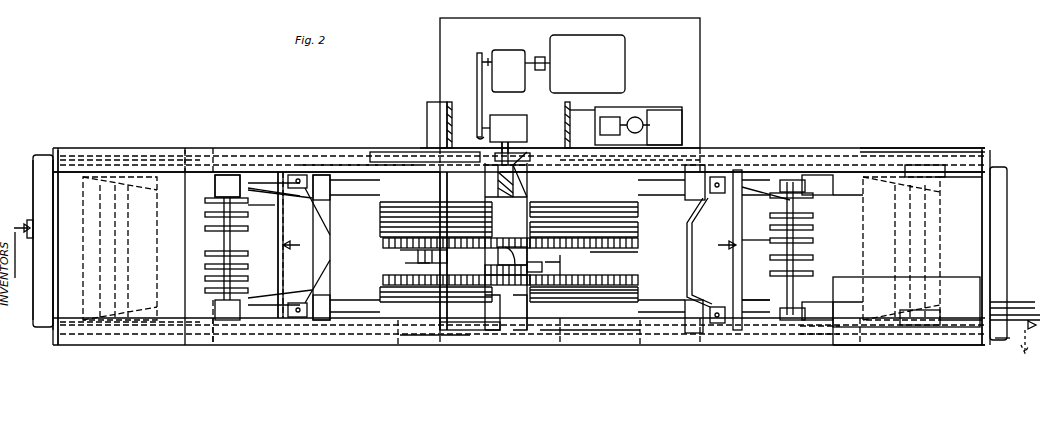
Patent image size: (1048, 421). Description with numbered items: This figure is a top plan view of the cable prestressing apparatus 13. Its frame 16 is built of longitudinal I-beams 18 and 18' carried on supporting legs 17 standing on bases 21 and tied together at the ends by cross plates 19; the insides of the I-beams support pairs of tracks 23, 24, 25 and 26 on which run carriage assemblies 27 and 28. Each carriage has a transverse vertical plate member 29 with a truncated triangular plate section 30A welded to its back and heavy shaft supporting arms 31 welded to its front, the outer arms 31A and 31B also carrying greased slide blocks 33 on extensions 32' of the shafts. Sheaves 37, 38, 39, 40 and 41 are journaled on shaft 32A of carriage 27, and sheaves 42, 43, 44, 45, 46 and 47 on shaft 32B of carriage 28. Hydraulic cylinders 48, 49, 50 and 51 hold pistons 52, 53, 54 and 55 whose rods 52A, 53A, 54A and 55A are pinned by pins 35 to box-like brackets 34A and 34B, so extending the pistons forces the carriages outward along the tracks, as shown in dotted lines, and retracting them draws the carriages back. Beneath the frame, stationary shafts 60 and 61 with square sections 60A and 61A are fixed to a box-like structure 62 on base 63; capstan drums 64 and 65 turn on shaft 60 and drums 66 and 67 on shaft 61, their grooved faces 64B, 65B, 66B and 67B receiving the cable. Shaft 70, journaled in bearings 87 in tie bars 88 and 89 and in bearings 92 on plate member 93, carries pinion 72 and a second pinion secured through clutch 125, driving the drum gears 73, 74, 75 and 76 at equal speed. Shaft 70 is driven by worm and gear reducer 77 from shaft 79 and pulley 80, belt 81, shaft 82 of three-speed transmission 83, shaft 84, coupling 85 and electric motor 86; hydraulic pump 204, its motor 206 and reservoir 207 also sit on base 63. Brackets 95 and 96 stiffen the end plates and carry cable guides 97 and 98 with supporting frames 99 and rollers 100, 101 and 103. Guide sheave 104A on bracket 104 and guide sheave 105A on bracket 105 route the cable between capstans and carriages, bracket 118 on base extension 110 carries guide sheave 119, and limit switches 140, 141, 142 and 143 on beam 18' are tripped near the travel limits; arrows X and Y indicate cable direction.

The prestressing apparatus 13 is at (383, 109).
The bracket 95 is at (42, 158).
The cable guide 97 is at (36, 200).
The roller 100 is at (28, 226).
The supporting frame 99 is at (53, 262).
The direction X is at (22, 258).
The cross plate 19 is at (58, 196).
The outer trip limit switch 141 is at (74, 158).
The track 26 is at (170, 152).
The supporting leg 17 is at (204, 165).
The slide block 33 is at (223, 172).
The outer shaft supporting arm 31B is at (246, 175).
The bracket 104 is at (282, 170).
The inner trip limit switch 143 is at (320, 172).
The frame 16 is at (346, 165).
The piston rod 55A is at (400, 160).
The hydraulic cylinder 51 is at (425, 148).
The square section 60A is at (430, 110).
The box-like supporting structure 62 is at (449, 104).
The pulley 80 is at (482, 128).
The shaft 79 is at (477, 137).
The belt 81 is at (477, 80).
The shaft 82 is at (487, 60).
The 3-speed gear transmission 83 is at (508, 71).
The shaft 84 is at (533, 63).
The coupling 85 is at (540, 57).
The electric motor 86 is at (587, 64).
The base 63 is at (700, 58).
The worm and gear reducer 77 is at (508, 128).
The shaft 70 is at (528, 140).
The bearing 92 is at (530, 158).
The piston 55 is at (495, 157).
The piston 53 is at (530, 172).
The plate member 93 is at (570, 125).
The square section 61A is at (612, 108).
The hydraulic pump 204 is at (640, 118).
The electric motor 206 is at (614, 135).
The tank or reservoir 207 is at (664, 127).
The piston rod 53A is at (614, 165).
The hydraulic cylinder 49 is at (652, 172).
The inner trip limit switch 142 is at (705, 168).
The shaft extension 32' is at (786, 243).
The track 24 is at (852, 156).
The longitudinal beam 18' is at (922, 137).
The longitudinal beam 18 is at (519, 352).
The base 21 is at (215, 190).
The sheave 47 is at (205, 201).
The sheave 46 is at (205, 215).
The sheave 45 is at (205, 229).
The sheave 44 is at (205, 254).
The sheave 43 is at (205, 267).
The sheave 42 is at (205, 279).
The shaft 32B is at (205, 291).
The guide sheave 104A is at (252, 205).
The roller 101 is at (86, 230).
The track 25 is at (95, 320).
The bracket 105 is at (246, 335).
The outer shaft supporting arm 31A is at (305, 335).
The shaft supporting arm 31 is at (280, 248).
The transverse vertical plate member 29 is at (280, 268).
The pin 35 is at (296, 190).
The box-like bracket 34A is at (312, 212).
The carriage assembly 28 is at (299, 245).
The guide sheave 105A is at (283, 280).
The box-like bracket 34B is at (298, 302).
The truncated triangular plate section 30A is at (380, 205).
The capstan drum 65 is at (380, 222).
The grooved face 65B is at (383, 243).
The gear 74 is at (400, 251).
The grooved face 64B is at (383, 278).
The capstan drum 64 is at (380, 292).
The tie bar 88 is at (418, 256).
The gear 73 is at (410, 264).
The stationary shaft 60 is at (434, 251).
The clutch 125 is at (485, 269).
The pinion 72 is at (520, 260).
The bearing 87 is at (542, 268).
The stationary shaft 61 is at (560, 265).
The gear 75 is at (606, 275).
The gear 76 is at (638, 243).
The tie bar 89 is at (600, 252).
The grooved face 67B is at (638, 210).
The capstan drum 67 is at (638, 227).
The grooved face 66B is at (638, 288).
The capstan drum 66 is at (638, 297).
The piston rod 54A is at (398, 335).
The hydraulic cylinder 50 is at (420, 335).
The piston 54 is at (478, 333).
The piston 52 is at (560, 335).
The piston rod 52A is at (636, 338).
The hydraulic cylinder 48 is at (685, 333).
The track 23 is at (848, 345).
The carriage assembly 27 is at (718, 245).
The shaft 32A is at (813, 196).
The sheave 41 is at (813, 215).
The sheave 40 is at (813, 228).
The sheave 39 is at (813, 241).
The sheave 38 is at (813, 257).
The sheave 37 is at (813, 274).
The outer trip limit switch 140 is at (944, 172).
The base extension 110 is at (950, 285).
The bracket 96 is at (1007, 232).
The bracket 118 is at (1010, 300).
The guide sheave 119 is at (1025, 312).
The roller 103 is at (968, 318).
The cable guide 98 is at (1002, 340).
The direction Y is at (1029, 347).